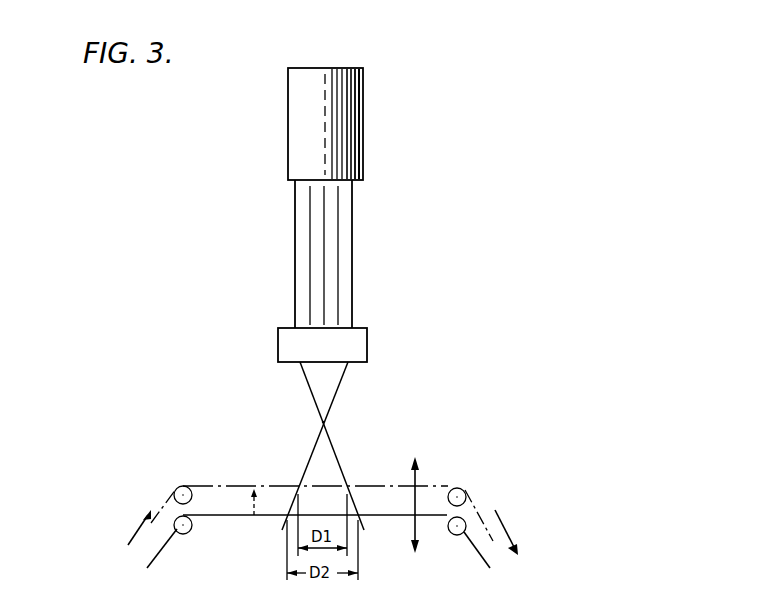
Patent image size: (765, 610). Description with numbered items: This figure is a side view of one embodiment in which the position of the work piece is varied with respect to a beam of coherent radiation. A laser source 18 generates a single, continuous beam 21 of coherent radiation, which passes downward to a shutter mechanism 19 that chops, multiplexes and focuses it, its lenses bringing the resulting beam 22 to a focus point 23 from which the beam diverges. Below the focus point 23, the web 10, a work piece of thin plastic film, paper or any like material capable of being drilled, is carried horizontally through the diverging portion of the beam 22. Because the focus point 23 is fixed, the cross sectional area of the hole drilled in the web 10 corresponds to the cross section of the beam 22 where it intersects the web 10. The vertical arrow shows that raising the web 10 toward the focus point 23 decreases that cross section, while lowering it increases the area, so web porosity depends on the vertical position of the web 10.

The laser source 18 is at (363, 105).
The beam of coherent radiation 21 is at (352, 262).
The shutter mechanism 19 is at (367, 341).
The beam of focused coherent radiation 22 is at (339, 386).
The focus point 23 is at (326, 421).
The web 10 is at (208, 485).